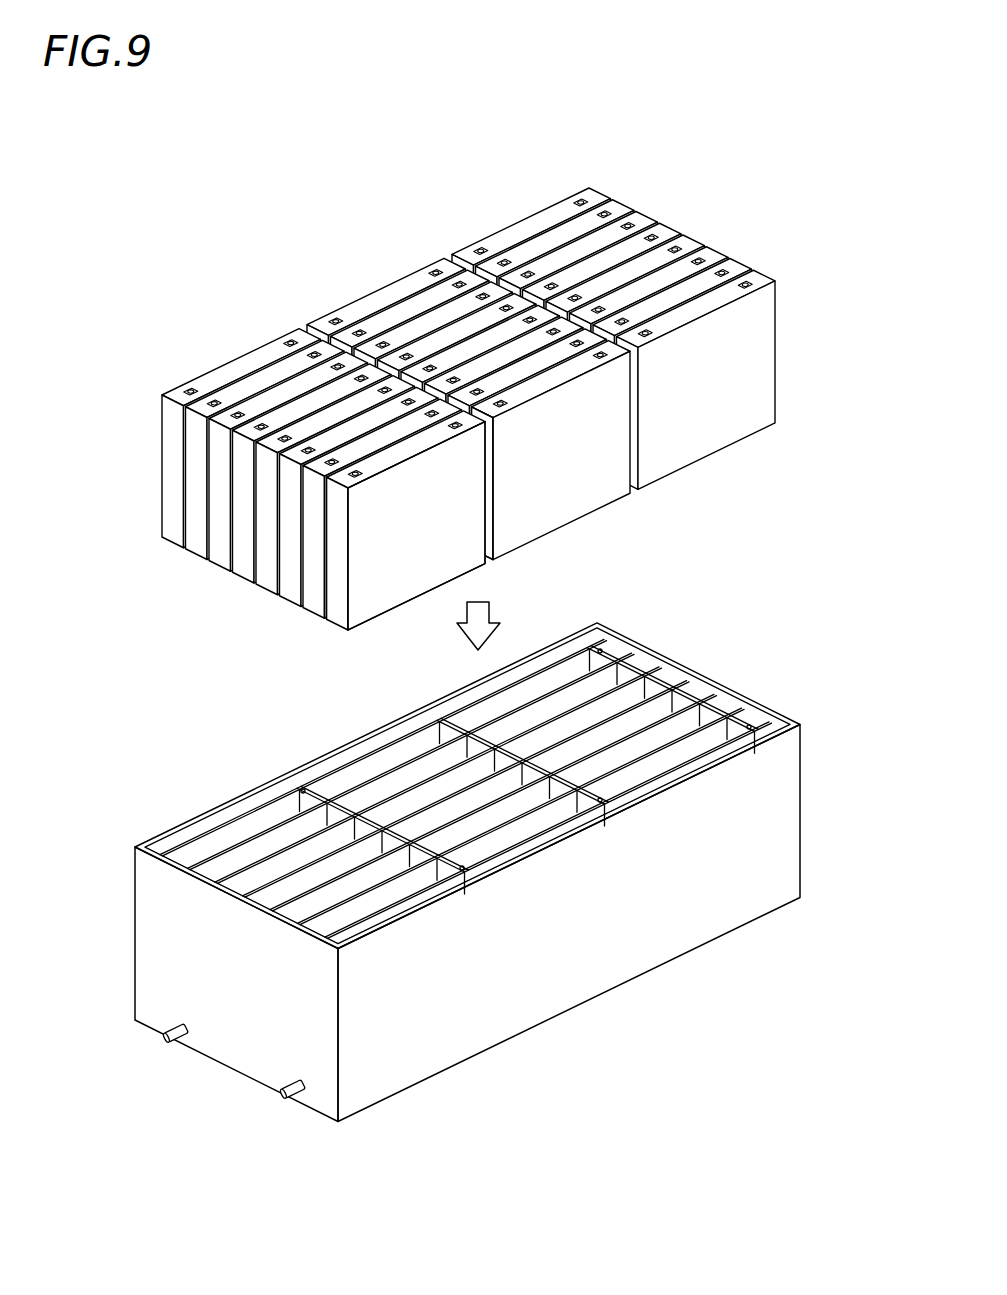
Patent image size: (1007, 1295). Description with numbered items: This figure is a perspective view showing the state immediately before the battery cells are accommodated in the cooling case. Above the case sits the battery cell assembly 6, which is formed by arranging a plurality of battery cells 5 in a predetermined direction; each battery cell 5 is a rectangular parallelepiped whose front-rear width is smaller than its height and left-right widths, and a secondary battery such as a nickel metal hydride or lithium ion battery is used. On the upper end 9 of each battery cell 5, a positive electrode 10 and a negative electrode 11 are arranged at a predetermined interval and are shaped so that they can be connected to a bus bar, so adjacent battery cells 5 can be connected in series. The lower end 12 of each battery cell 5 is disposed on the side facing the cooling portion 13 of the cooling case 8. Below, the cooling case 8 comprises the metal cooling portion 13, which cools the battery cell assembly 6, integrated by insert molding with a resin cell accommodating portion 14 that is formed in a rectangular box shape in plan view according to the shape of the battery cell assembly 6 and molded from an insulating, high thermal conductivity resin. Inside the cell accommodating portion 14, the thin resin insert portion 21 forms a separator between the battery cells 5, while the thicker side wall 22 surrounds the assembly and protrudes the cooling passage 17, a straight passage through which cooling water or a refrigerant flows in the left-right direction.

The battery cell 5 is at (243, 368).
The battery cell assembly 6 is at (340, 272).
The cooling case 8 is at (134, 788).
The upper end 9 is at (412, 447).
The positive electrode 10 is at (332, 478).
The negative electrode 11 is at (500, 415).
The lower end 12 is at (472, 568).
The cooling portion 13 is at (512, 1028).
The cell accommodating portion 14 is at (231, 804).
The cooling passage 17 is at (292, 1098).
The resin insert portion 21 is at (372, 782).
The side wall 22 is at (648, 958).